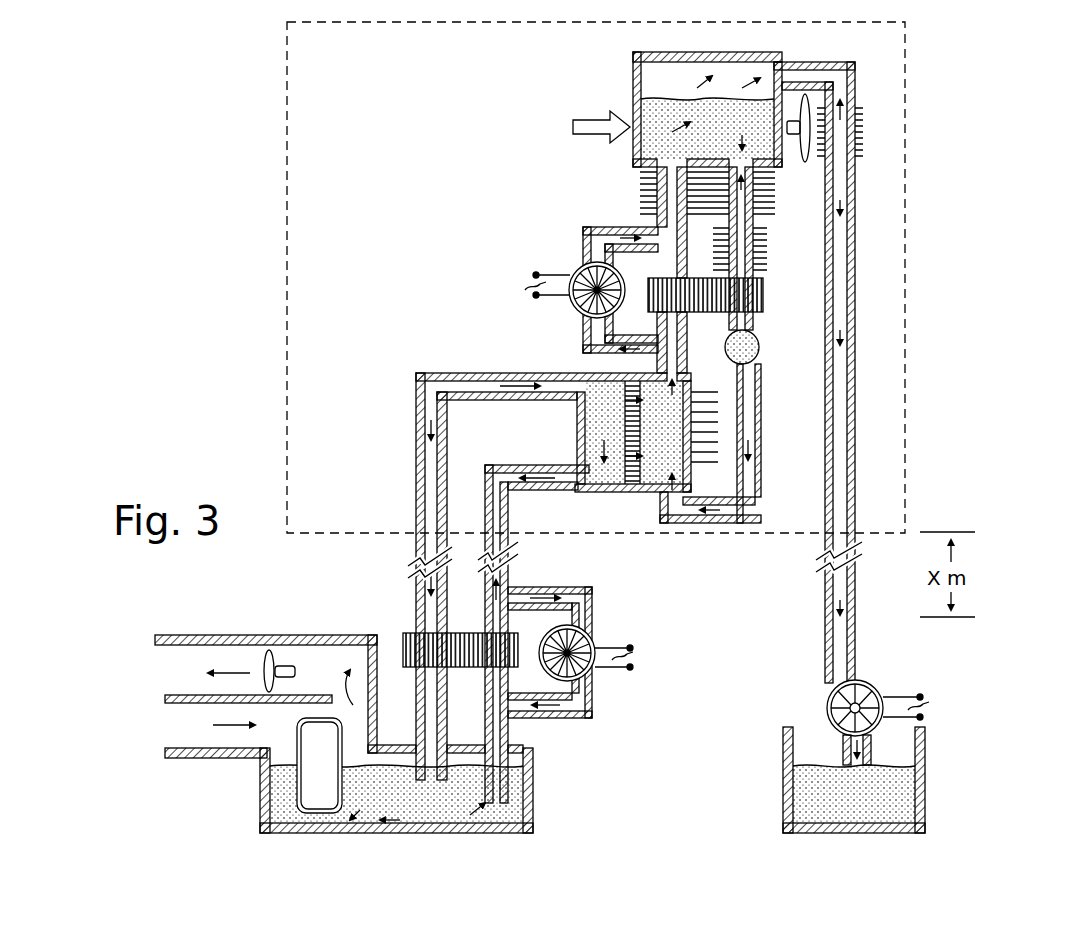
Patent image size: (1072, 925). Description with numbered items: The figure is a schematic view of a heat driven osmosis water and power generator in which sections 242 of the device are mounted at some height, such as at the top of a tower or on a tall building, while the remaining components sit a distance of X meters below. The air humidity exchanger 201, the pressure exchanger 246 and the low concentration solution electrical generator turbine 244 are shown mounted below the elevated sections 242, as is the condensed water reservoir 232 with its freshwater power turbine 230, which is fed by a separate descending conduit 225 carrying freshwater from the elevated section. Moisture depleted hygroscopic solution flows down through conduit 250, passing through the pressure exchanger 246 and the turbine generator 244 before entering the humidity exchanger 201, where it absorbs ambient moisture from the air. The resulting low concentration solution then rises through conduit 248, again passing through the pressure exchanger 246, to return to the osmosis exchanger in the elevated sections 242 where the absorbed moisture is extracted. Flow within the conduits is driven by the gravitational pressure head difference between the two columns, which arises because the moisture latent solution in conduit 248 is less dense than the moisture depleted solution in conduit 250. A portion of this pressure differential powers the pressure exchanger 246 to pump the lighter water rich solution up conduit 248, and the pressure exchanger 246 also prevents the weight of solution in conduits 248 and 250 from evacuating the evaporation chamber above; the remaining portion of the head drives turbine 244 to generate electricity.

The air humidity exchanger 201 is at (262, 787).
The riser conduit 225 is at (860, 138).
The freshwater power turbine 230 is at (826, 694).
The condensed water reservoir 232 is at (924, 776).
The sections 242 is at (285, 410).
The low concentration solution electrical generator turbine 244 is at (600, 626).
The pressure exchanger 246 is at (402, 646).
The conduit 248 is at (412, 548).
The conduit 250 is at (520, 546).